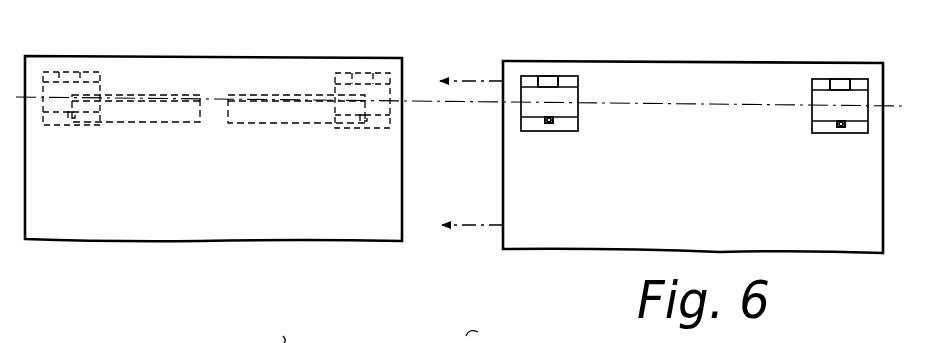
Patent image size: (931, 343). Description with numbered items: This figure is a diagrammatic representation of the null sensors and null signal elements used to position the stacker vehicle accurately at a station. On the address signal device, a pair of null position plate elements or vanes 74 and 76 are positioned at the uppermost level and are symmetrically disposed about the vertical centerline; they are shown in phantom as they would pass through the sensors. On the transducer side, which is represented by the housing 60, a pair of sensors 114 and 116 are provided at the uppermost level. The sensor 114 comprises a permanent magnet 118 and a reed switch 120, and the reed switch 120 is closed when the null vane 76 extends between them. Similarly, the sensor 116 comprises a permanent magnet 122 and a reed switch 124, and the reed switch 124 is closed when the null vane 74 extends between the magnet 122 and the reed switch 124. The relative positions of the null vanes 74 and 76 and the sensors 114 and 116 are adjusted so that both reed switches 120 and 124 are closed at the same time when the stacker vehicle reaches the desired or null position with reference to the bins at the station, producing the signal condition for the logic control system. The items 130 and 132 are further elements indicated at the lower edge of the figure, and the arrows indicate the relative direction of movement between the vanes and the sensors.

The housing 60 is at (502, 233).
The null position vane 74 is at (287, 110).
The null position vane 76 is at (162, 112).
The sensor 114 is at (101, 88).
The sensor 116 is at (381, 80).
The permanent magnet 118 is at (540, 76).
The reed switch 120 is at (548, 126).
The permanent magnet 122 is at (845, 79).
The reed switch 124 is at (840, 132).
The element 130 is at (263, 331).
The element 132 is at (488, 331).